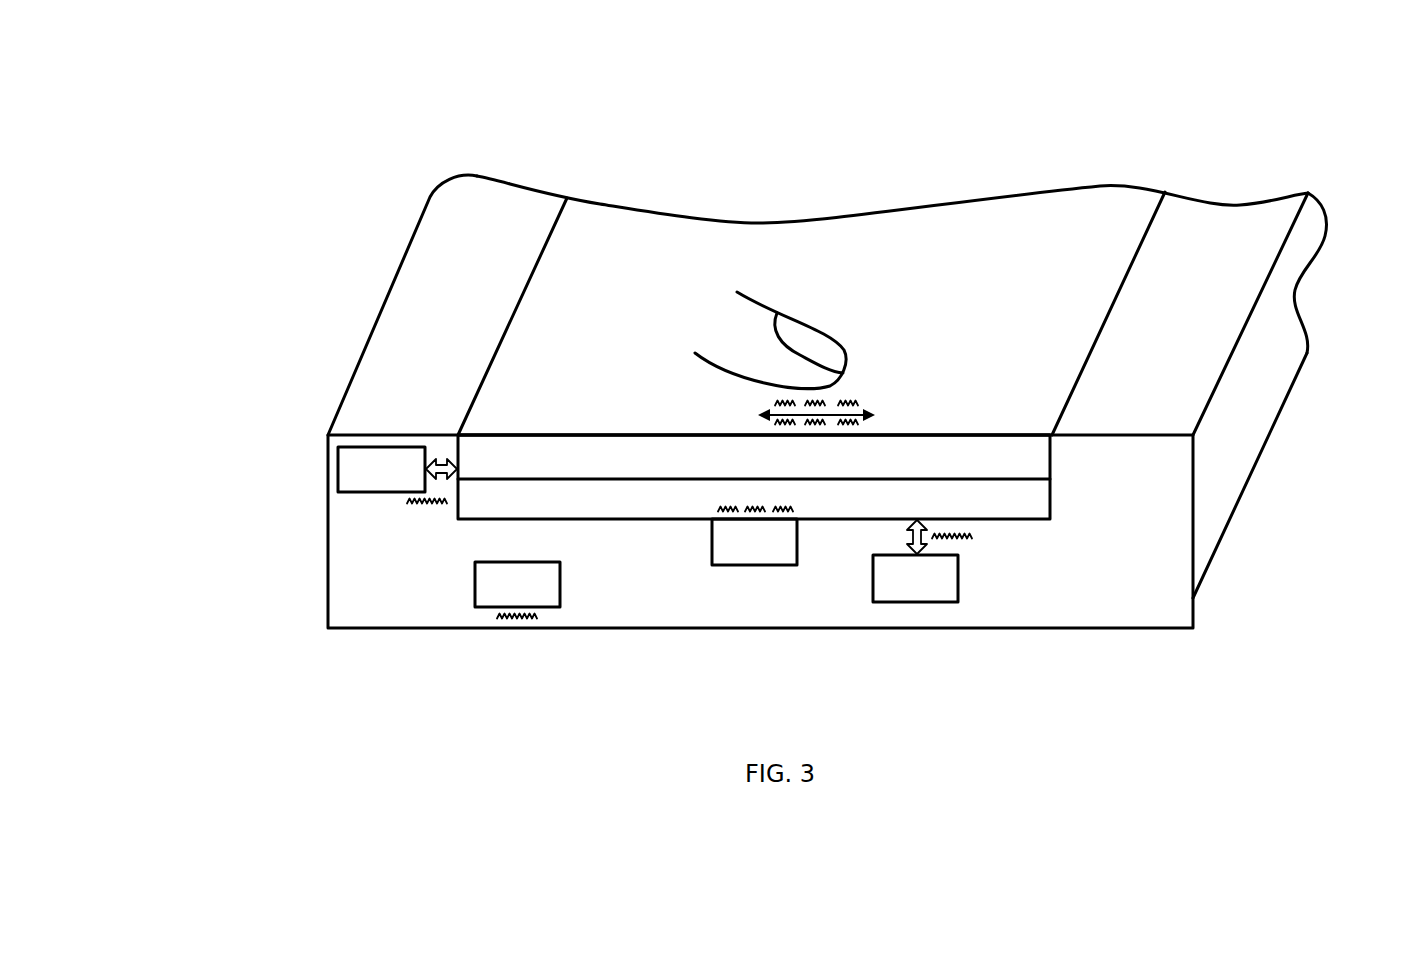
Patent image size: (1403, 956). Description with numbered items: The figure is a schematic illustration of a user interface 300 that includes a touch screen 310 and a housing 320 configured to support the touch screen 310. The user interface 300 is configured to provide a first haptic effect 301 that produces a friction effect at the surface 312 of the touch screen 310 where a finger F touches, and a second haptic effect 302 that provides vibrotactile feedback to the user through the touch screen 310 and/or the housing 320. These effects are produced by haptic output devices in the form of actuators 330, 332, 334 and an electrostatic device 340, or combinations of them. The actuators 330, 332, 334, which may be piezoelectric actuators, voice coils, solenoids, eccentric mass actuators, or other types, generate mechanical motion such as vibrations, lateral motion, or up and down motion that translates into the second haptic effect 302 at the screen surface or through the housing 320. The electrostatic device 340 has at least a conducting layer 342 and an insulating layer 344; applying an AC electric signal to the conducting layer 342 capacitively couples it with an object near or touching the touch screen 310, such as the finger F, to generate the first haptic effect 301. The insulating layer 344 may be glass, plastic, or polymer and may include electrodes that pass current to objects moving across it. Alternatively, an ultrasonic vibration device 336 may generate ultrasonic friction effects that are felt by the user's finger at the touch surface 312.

The user interface 300 is at (377, 145).
The touch screen 310 is at (744, 221).
The surface of the touch screen 312 is at (1044, 355).
The housing 320 is at (360, 365).
The first haptic effect 301 is at (864, 386).
The second haptic effect 302 is at (410, 520).
The actuator 330 is at (539, 599).
The actuator 332 is at (937, 595).
The actuator 334 is at (403, 486).
The ultrasonic vibration device 336 is at (776, 559).
The electrostatic device 340 is at (1060, 442).
The conducting layer 342 is at (1034, 512).
The insulating layer 344 is at (1034, 471).
The finger F is at (808, 318).